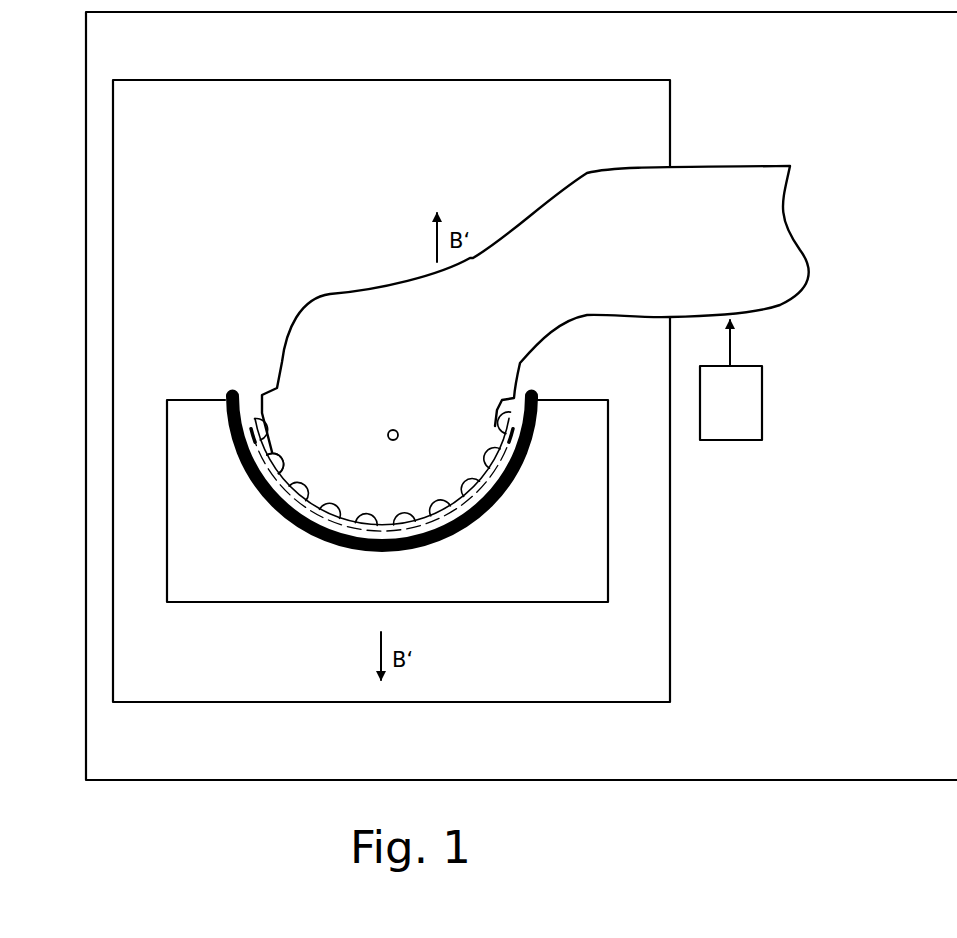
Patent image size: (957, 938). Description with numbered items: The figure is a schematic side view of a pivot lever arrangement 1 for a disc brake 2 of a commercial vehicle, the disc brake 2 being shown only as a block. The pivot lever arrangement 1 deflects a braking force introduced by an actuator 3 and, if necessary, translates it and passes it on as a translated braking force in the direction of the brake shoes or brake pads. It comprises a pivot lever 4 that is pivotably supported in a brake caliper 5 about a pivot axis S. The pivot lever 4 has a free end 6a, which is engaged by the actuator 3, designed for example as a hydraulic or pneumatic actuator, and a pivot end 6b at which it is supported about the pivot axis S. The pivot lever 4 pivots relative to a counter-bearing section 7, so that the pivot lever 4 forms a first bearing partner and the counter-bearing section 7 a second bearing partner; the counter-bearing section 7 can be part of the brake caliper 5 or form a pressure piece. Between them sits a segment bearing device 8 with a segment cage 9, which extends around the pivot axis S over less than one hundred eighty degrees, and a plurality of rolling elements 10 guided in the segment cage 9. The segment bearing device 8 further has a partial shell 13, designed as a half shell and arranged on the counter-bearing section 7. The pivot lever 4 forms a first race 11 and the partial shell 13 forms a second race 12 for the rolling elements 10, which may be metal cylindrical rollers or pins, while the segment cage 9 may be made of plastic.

The pivot lever arrangement 1 is at (288, 220).
The disc brake 2 is at (937, 771).
The actuator 3 is at (738, 422).
The pivot lever 4 is at (532, 290).
The brake caliper 5 is at (645, 688).
The free end 6a is at (748, 235).
The pivot end 6b is at (396, 483).
The counter-bearing section 7 is at (587, 589).
The segment bearing device 8 is at (266, 525).
The segment cage 9 is at (257, 440).
The rolling elements 10 is at (280, 466).
The first race 11 is at (325, 530).
The second race 12 is at (462, 512).
The partial shell 13 is at (232, 422).
The pivot axis S is at (399, 431).